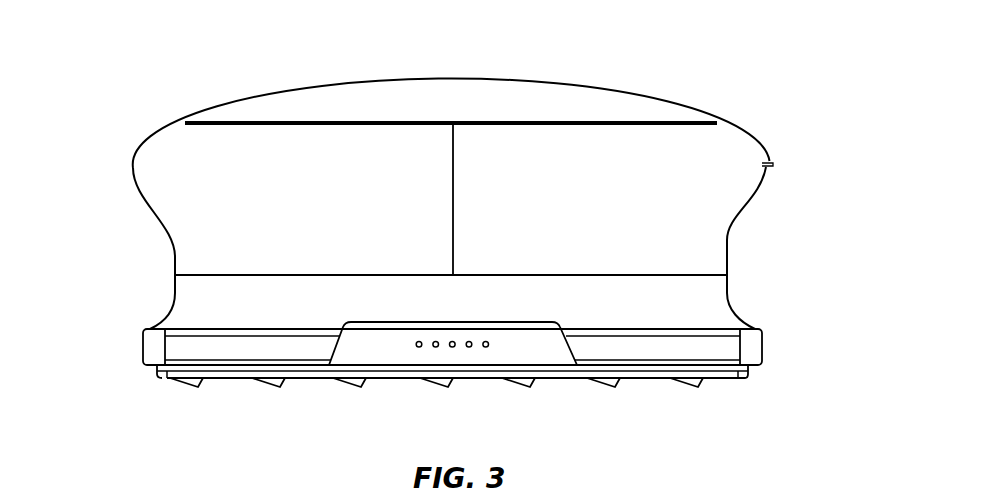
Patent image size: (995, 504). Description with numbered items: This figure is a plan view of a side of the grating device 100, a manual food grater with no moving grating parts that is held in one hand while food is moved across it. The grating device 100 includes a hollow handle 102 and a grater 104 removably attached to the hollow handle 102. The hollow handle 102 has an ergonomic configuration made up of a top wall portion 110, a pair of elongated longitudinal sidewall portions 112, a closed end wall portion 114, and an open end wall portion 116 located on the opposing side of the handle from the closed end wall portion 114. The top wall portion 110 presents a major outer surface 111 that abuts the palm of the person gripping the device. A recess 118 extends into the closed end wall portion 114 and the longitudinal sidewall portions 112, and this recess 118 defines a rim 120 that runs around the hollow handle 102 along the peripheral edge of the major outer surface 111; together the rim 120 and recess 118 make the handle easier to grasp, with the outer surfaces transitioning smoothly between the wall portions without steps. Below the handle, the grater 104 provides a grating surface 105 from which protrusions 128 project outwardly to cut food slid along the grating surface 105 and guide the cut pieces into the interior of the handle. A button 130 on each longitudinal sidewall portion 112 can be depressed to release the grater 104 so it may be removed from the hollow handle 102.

The grating device 100 is at (756, 83).
The hollow handle 102 is at (497, 72).
The grater 104 is at (310, 372).
The grating surface 105 is at (398, 378).
The top wall portion 110 is at (400, 98).
The major outer surface 111 is at (302, 95).
The elongated longitudinal sidewall portions 112 is at (483, 178).
The closed end wall portion 114 is at (173, 254).
The open end wall portion 116 is at (728, 286).
The recess 118 is at (153, 281).
The rim 120 is at (132, 167).
The protrusions 128 is at (187, 388).
The button 130 is at (150, 349).